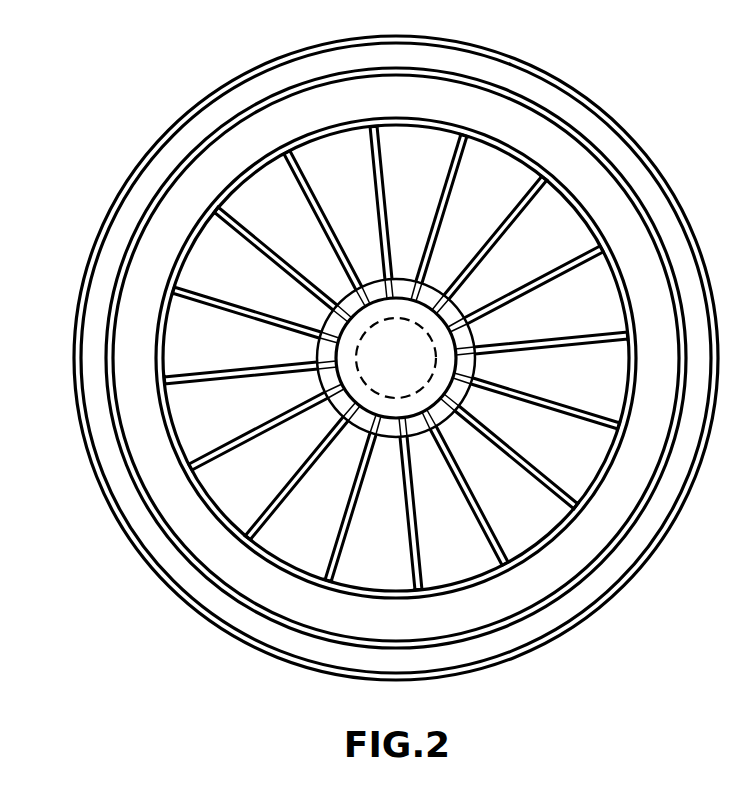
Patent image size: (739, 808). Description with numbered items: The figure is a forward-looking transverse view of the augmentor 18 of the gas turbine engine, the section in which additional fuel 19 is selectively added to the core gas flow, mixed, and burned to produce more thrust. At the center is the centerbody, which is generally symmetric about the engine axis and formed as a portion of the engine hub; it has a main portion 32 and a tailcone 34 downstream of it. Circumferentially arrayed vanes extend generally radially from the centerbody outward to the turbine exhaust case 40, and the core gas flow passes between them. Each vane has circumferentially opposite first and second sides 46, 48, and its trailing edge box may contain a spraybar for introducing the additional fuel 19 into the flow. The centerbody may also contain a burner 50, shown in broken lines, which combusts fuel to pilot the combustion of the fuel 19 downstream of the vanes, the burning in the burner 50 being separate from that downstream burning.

The augmentor 18 is at (157, 127).
The additional fuel 19 is at (396, 295).
The main portion 32 is at (470, 373).
The tailcone 34 is at (480, 331).
The turbine exhaust case 40 is at (157, 345).
The first side 46 is at (470, 167).
The second side 48 is at (492, 148).
The burner 50 is at (402, 400).